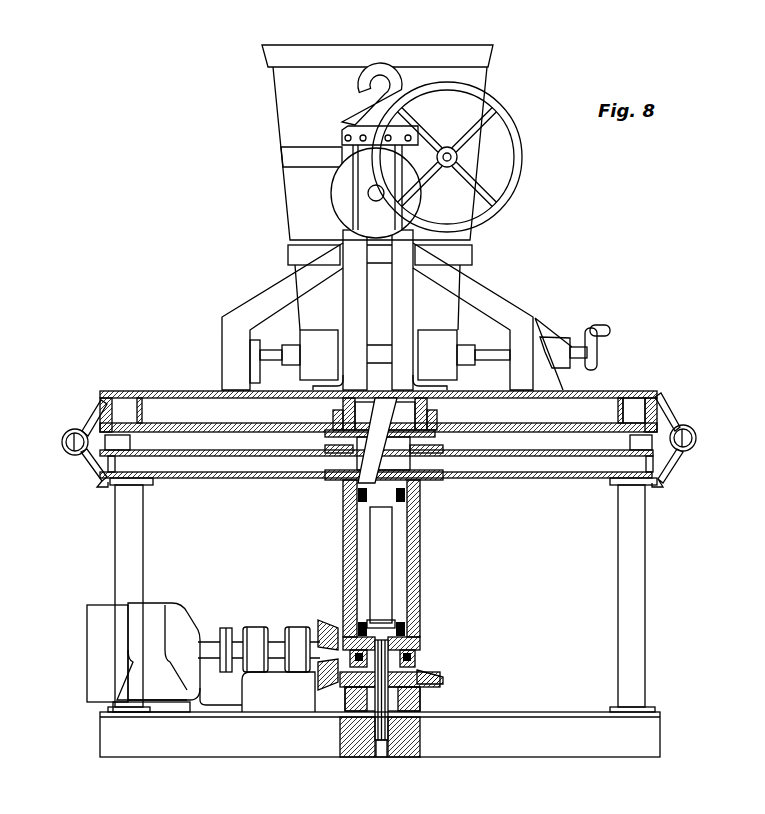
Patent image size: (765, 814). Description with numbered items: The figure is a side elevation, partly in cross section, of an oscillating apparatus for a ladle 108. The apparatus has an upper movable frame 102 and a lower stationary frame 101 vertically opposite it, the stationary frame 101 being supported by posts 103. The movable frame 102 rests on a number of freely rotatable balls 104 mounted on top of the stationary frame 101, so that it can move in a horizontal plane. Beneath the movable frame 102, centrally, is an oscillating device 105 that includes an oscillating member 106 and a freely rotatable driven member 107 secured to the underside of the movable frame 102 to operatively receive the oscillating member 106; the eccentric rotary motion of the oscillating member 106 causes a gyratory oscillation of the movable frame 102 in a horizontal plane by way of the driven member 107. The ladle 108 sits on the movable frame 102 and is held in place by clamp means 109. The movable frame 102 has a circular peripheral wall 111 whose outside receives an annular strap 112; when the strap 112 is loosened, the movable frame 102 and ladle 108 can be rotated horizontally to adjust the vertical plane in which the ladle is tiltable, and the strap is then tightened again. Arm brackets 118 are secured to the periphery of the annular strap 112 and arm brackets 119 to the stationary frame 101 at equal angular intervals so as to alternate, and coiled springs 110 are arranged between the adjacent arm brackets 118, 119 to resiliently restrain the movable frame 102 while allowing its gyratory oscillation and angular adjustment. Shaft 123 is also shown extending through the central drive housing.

The stationary frame 101 is at (551, 478).
The movable frame 102 is at (625, 393).
The post 103 is at (646, 581).
The ball 104 is at (630, 439).
The oscillating device 105 is at (427, 650).
The oscillating member 106 is at (362, 460).
The driven member 107 is at (343, 405).
The ladle 108 is at (331, 53).
The clamp means 109 is at (300, 341).
The coiled spring 110 is at (64, 431).
The circular peripheral wall 111 is at (651, 394).
The annular strap 112 is at (658, 398).
The arm bracket 118 is at (93, 406).
The arm bracket 119 is at (83, 479).
The drive shaft 123 is at (370, 558).